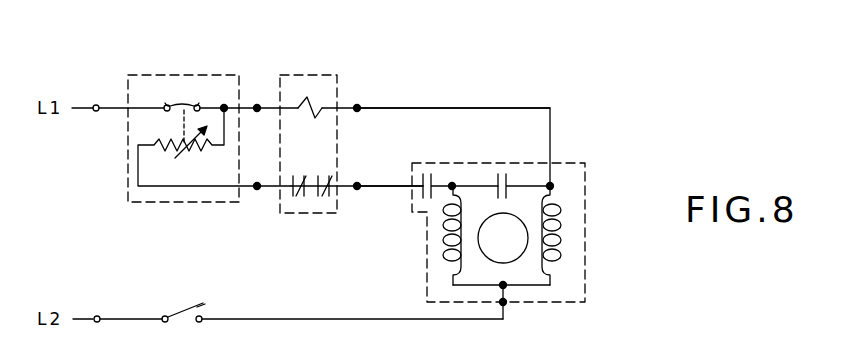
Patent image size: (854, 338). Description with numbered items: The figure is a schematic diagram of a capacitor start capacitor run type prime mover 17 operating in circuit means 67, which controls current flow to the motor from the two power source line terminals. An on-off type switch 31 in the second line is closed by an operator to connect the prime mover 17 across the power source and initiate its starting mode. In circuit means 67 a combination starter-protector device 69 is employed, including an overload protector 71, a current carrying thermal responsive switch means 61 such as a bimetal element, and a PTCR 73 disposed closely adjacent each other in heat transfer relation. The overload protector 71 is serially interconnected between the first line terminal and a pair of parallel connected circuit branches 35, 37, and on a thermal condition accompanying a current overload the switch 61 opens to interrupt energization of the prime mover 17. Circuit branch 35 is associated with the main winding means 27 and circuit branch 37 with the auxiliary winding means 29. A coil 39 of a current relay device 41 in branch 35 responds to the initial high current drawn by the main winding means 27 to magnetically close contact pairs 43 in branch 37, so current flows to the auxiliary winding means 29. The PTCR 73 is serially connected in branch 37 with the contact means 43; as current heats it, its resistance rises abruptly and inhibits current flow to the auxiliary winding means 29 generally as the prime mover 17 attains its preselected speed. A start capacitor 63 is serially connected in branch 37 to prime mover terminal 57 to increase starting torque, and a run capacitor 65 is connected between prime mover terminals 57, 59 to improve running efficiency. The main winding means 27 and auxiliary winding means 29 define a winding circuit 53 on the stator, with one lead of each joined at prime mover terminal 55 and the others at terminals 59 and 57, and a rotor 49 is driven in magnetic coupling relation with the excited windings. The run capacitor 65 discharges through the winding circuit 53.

The prime mover 17 is at (607, 160).
The main winding means 27 is at (563, 259).
The auxiliary winding means 29 is at (448, 253).
The on-off type switch 31 is at (190, 303).
The circuit branch 35 is at (421, 108).
The circuit branch 37 is at (381, 186).
The coil 39 is at (308, 96).
The current relay device 41 is at (317, 75).
The contact pairs 43 is at (323, 202).
The rotor 49 is at (503, 238).
The winding circuit 53 is at (568, 228).
The prime mover terminal 55 is at (507, 306).
The prime mover terminal 57 is at (452, 178).
The prime mover terminal 59 is at (552, 186).
The thermal responsive switch 61 is at (177, 104).
The start capacitor 63 is at (427, 173).
The run capacitor 65 is at (502, 172).
The circuit means 67 is at (170, 140).
The combination starter-protector device 69 is at (128, 82).
The overload protector 71 is at (193, 96).
The PTCR 73 is at (193, 148).